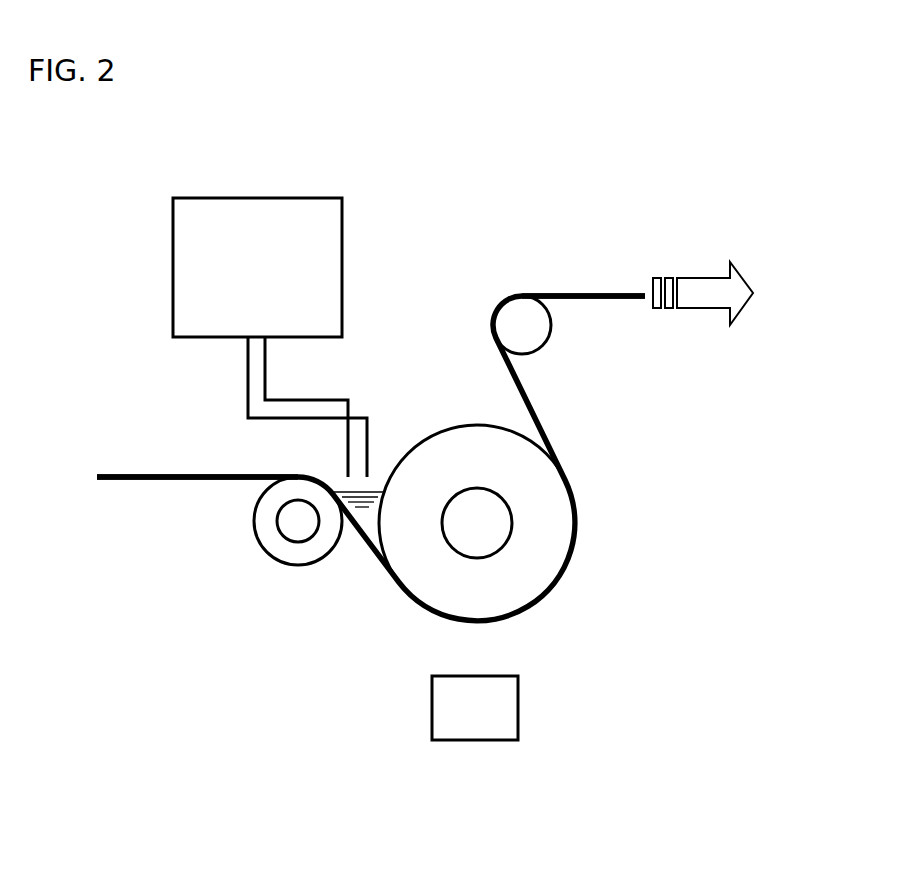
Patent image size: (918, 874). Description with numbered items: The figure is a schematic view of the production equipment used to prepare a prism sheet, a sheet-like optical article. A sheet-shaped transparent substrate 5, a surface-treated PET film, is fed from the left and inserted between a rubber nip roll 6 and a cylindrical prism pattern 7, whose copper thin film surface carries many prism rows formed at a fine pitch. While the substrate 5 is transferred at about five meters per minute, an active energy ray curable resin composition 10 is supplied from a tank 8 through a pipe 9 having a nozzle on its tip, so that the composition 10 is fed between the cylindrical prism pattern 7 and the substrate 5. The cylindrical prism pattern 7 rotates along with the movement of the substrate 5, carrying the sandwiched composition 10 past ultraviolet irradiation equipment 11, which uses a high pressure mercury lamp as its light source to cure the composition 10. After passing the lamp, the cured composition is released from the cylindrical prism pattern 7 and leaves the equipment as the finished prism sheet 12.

The sheet-shaped transparent substrate 5 is at (163, 460).
The rubber nip roll 6 is at (299, 596).
The cylindrical prism pattern 7 is at (475, 403).
The tank 8 is at (363, 268).
The pipe 9 is at (325, 443).
The active energy ray curable resin composition 10 is at (380, 471).
The ultraviolet irradiation equipment 11 is at (538, 708).
The prism sheet 12 is at (605, 271).